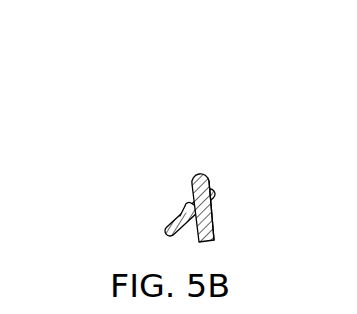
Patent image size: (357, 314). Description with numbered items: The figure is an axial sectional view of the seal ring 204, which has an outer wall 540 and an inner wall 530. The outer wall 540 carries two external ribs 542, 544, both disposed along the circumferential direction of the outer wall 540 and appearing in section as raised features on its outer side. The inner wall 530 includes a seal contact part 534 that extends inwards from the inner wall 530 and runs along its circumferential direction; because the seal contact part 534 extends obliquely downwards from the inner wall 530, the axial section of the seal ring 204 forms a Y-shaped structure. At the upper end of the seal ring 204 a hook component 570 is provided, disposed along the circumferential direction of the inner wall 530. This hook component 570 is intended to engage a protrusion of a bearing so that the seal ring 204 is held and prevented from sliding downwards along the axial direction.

The seal ring 204 is at (77, 77).
The inner wall 530 is at (191, 194).
The seal contact part 534 is at (167, 230).
The hook component 570 is at (199, 177).
The external rib 542 is at (212, 196).
The outer wall 540 is at (214, 212).
The external rib 544 is at (214, 238).